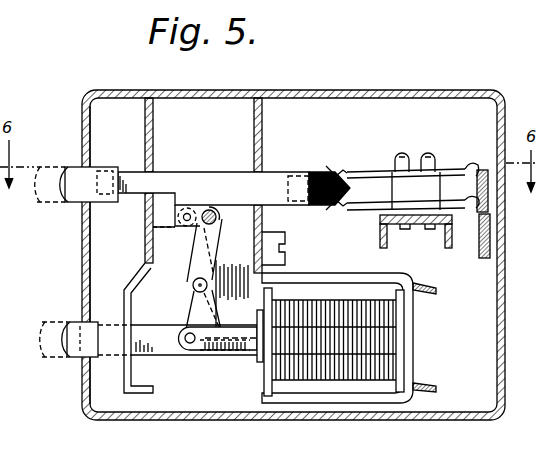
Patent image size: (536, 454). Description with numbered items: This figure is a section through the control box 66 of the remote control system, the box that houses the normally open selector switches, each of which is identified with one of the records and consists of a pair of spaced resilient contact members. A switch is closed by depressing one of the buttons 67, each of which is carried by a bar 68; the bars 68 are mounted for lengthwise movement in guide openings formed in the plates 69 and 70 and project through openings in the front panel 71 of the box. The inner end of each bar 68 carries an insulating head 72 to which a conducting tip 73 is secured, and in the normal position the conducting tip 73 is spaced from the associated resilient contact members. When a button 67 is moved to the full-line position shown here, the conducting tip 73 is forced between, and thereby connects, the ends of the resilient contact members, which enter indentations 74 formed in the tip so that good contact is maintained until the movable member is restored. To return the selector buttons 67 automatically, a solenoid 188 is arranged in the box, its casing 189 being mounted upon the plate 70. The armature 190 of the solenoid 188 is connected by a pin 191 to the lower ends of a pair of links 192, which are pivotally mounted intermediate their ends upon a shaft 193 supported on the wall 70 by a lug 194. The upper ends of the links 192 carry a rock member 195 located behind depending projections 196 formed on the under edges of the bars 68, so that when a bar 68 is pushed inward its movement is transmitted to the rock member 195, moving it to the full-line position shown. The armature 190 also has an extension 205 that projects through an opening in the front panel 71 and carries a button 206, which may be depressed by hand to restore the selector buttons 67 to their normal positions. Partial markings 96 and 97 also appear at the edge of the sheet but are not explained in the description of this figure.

The control box 66 is at (420, 87).
The buttons 67 is at (72, 167).
The bars 68 is at (212, 158).
The plate 69 is at (153, 114).
The plate 70 is at (262, 112).
The front panel 71 is at (82, 245).
The insulating heads 72 is at (323, 172).
The conducting tips 73 is at (342, 176).
The indentations 74 is at (336, 178).
The solenoid 188 is at (365, 362).
The casing 189 is at (356, 262).
The armature 190 is at (240, 352).
The pin 191 is at (193, 352).
The links 192 is at (190, 314).
The shaft 193 is at (193, 287).
The lug 194 is at (234, 295).
The rock member 195 is at (216, 208).
The depending projections 196 is at (186, 235).
The extension 205 is at (138, 350).
The button 206 is at (62, 357).
The element 96 is at (527, 308).
The element 97 is at (511, 445).